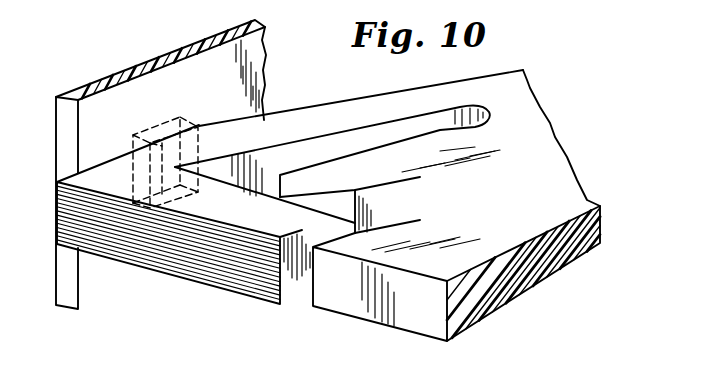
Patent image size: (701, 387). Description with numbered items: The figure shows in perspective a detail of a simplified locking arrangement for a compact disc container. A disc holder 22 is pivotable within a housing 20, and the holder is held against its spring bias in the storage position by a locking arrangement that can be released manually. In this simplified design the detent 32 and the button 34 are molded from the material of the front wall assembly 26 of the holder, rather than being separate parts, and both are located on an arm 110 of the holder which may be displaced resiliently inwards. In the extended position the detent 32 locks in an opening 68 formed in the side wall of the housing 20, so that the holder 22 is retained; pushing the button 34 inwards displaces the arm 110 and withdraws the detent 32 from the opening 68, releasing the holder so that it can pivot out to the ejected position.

The housing 20 is at (117, 69).
The disc holder 22 is at (560, 128).
The front wall assembly 26 is at (425, 326).
The detent 32 is at (162, 136).
The button 34 is at (209, 272).
The opening 68 is at (199, 126).
The arm 110 is at (277, 124).